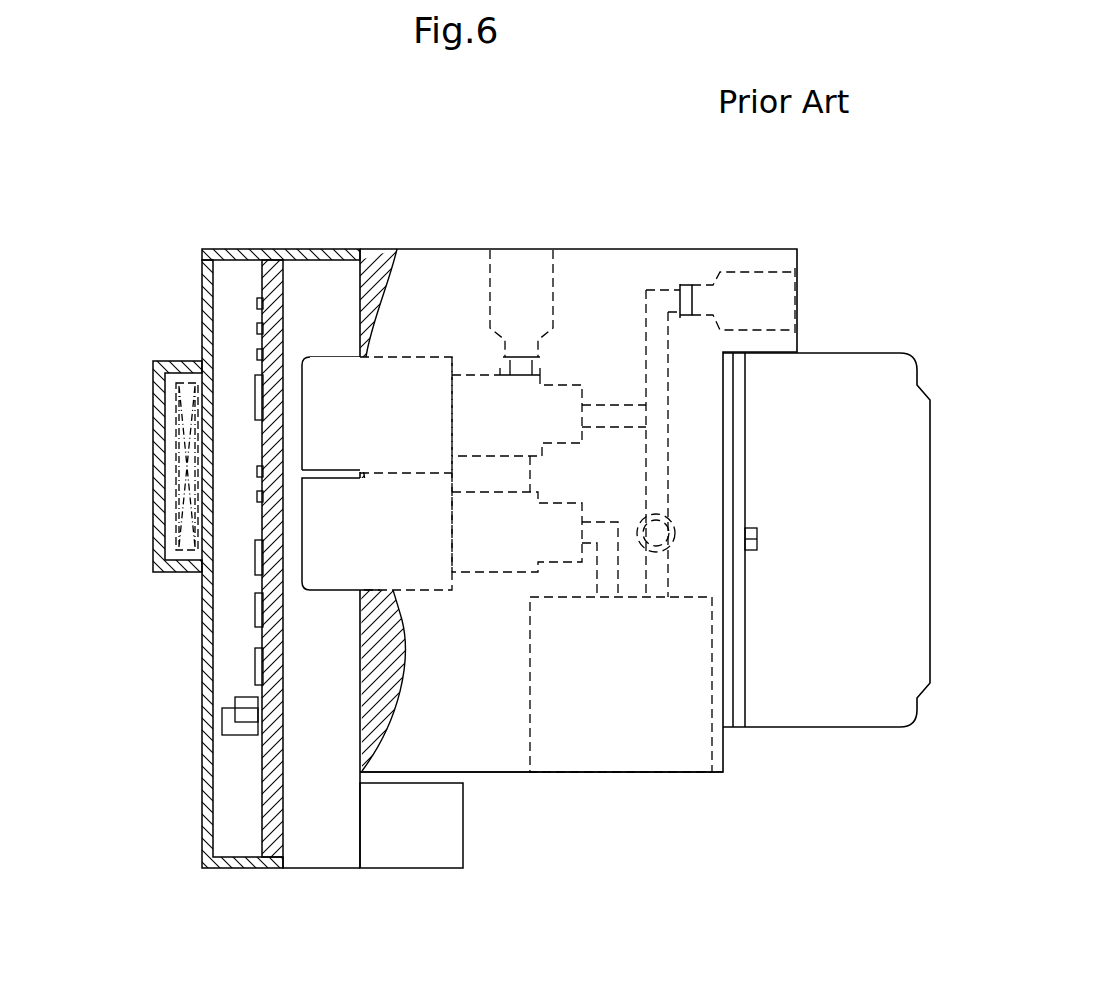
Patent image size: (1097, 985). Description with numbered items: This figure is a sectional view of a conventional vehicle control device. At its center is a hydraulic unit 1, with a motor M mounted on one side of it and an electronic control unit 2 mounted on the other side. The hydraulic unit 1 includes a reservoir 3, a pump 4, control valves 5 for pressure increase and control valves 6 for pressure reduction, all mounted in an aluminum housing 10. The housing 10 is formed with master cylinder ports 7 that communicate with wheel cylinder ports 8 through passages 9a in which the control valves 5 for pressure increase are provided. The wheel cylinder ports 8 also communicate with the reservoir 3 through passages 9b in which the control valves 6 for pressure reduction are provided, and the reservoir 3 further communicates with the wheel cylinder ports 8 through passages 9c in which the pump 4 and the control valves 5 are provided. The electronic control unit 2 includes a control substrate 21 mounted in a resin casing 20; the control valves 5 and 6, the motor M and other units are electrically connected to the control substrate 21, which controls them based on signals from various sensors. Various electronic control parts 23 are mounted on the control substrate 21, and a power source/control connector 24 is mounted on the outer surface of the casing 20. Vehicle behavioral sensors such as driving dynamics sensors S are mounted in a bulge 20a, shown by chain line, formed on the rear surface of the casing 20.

The hydraulic unit 1 is at (602, 236).
The electronic control unit 2 is at (222, 240).
The reservoir 3 is at (632, 722).
The pump 4 is at (670, 523).
The control valves for pressure increase 5 is at (322, 372).
The control valves for pressure reduction 6 is at (325, 545).
The master cylinder ports 7 is at (806, 297).
The wheel cylinder ports 8 is at (525, 290).
The passages 9a is at (658, 300).
The passages 9b is at (512, 470).
The passages 9c is at (660, 579).
The aluminum housing 10 is at (518, 740).
The resin casing 20 is at (207, 822).
The bulge 20a is at (152, 412).
The control substrate 21 is at (277, 808).
The electronic control parts 23 is at (258, 303).
The power source/control connector 24 is at (387, 837).
The driving dynamics sensors S is at (190, 464).
The motor M is at (866, 502).